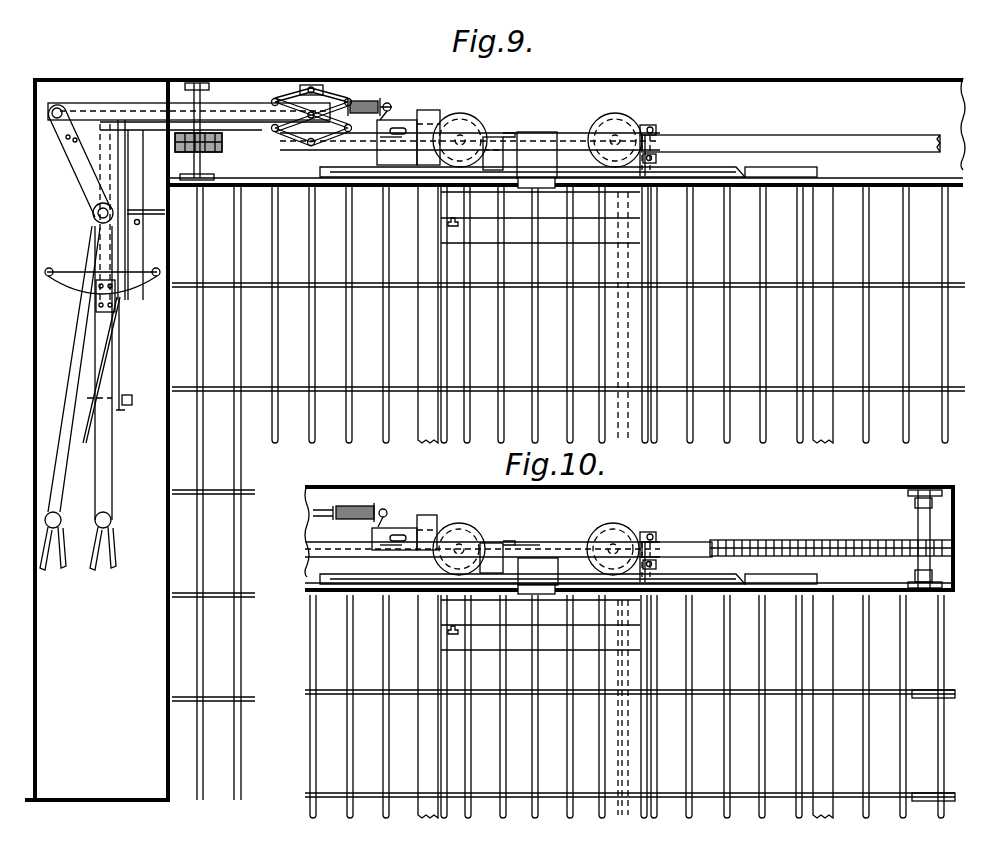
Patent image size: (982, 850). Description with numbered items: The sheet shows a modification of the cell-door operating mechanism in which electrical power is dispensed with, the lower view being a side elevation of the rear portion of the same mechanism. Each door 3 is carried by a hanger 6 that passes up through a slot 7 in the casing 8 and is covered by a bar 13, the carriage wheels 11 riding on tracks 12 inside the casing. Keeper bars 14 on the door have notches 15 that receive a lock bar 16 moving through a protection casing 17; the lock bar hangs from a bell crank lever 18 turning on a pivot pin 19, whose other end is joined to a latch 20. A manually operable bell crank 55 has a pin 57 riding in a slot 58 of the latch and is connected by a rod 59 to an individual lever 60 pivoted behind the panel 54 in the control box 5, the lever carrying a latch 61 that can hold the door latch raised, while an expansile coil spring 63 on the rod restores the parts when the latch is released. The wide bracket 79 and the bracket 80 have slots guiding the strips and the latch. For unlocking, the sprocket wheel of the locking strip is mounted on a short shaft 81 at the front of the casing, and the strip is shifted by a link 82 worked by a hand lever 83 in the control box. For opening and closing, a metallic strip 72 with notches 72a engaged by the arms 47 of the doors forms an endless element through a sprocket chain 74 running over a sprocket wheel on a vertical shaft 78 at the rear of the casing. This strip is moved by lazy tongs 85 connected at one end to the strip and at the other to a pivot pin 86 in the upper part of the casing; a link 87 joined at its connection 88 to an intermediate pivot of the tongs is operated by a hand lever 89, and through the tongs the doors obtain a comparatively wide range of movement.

In FIG. 9, the door 3 is at (435, 336).
In FIG. 10, the door 3 is at (432, 744).
In FIG. 9, the control box 5 is at (33, 438).
In FIG. 9, the hanger 6 is at (537, 160).
In FIG. 10, the hanger 6 is at (538, 576).
In FIG. 9, the slot 7 is at (720, 180).
In FIG. 10, the slot 7 is at (720, 590).
In FIG. 9, the casing 8 is at (878, 82).
In FIG. 10, the casing 8 is at (794, 484).
In FIG. 9, the wheels 11 is at (642, 124).
In FIG. 10, the wheels 11 is at (639, 532).
In FIG. 9, the tracks 12 is at (815, 174).
In FIG. 10, the tracks 12 is at (795, 588).
In FIG. 9, the bar 13 is at (342, 178).
In FIG. 10, the bar 13 is at (380, 588).
In FIG. 9, the bars 14 is at (488, 238).
In FIG. 10, the bars 14 is at (488, 650).
In FIG. 9, the notches 15 is at (457, 220).
In FIG. 10, the notches 15 is at (457, 628).
In FIG. 9, the lock bar 16 is at (622, 262).
In FIG. 10, the lock bar 16 is at (622, 670).
In FIG. 10, the protection casing 17 is at (620, 744).
In FIG. 9, the bell crank lever 18 is at (656, 132).
In FIG. 10, the bell crank lever 18 is at (656, 532).
In FIG. 9, the pivot pin 19 is at (660, 160).
In FIG. 10, the pivot pin 19 is at (660, 564).
In FIG. 9, the latch 20 is at (571, 133).
In FIG. 10, the latch 20 is at (571, 541).
In FIG. 9, the arm 47 is at (510, 134).
In FIG. 10, the arm 47 is at (510, 542).
In FIG. 9, the panel 54 is at (130, 406).
In FIG. 9, the bell crank 55 is at (396, 125).
In FIG. 10, the bell crank 55 is at (385, 528).
In FIG. 9, the pin 57 is at (404, 136).
In FIG. 10, the pin 57 is at (400, 546).
In FIG. 9, the slot 58 is at (388, 130).
In FIG. 10, the slot 58 is at (395, 534).
In FIG. 9, the rod 59 is at (246, 103).
In FIG. 9, the lever 60 is at (132, 250).
In FIG. 9, the latch 61 is at (94, 404).
In FIG. 9, the expansile coil spring 63 is at (378, 104).
In FIG. 10, the expansile coil spring 63 is at (352, 508).
In FIG. 9, the metallic strip 72 is at (805, 138).
In FIG. 10, the metallic strip 72 is at (700, 548).
In FIG. 10, the notches 72a is at (540, 544).
In FIG. 10, the sprocket chain 74 is at (808, 538).
In FIG. 10, the vertical shaft 78 is at (918, 520).
In FIG. 9, the bracket 79 is at (452, 120).
In FIG. 10, the bracket 79 is at (427, 515).
In FIG. 9, the bracket 80 is at (494, 136).
In FIG. 10, the bracket 80 is at (492, 542).
In FIG. 9, the short shaft 81 is at (197, 100).
In FIG. 9, the link 82 is at (150, 121).
In FIG. 9, the hand lever 83 is at (80, 327).
In FIG. 9, the lazy tongs 85 is at (276, 138).
In FIG. 9, the pivot pin 86 is at (310, 92).
In FIG. 9, the link 87 is at (85, 107).
In FIG. 9, the connection 88 is at (340, 108).
In FIG. 9, the hand lever 89 is at (84, 184).